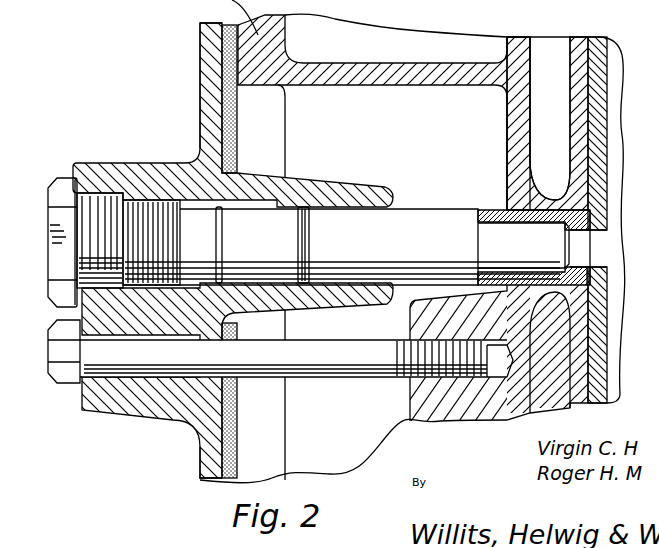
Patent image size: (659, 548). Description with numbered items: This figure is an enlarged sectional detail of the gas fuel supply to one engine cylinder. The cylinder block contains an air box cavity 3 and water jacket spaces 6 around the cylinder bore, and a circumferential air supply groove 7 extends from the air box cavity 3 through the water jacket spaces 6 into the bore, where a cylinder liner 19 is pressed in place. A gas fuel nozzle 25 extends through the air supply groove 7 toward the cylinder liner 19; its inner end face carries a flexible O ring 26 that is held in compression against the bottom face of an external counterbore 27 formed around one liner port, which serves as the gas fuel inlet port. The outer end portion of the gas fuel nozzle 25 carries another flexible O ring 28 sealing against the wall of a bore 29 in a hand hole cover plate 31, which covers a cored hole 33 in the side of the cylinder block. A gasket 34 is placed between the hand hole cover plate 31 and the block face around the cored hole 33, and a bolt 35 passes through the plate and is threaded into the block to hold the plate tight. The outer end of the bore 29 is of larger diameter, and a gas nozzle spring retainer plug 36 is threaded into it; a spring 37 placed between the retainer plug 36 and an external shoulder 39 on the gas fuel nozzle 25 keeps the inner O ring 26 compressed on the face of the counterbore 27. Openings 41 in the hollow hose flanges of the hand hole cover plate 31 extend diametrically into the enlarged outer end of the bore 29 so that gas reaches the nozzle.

The air box cavity 3 is at (342, 97).
The water jacket spaces 6 is at (563, 118).
The circumferential air supply groove 7 is at (507, 186).
The cylinder liner 19 is at (596, 142).
The gas fuel nozzle 25 is at (490, 209).
The flexible O ring 26 is at (590, 277).
The external counterbore 27 is at (597, 241).
The flexible O ring 28 is at (308, 207).
The bore 29 is at (394, 212).
The hand hole cover plate 31 is at (174, 165).
The cored hole 33 is at (225, 101).
The gasket 34 is at (233, 43).
The bolt 35 is at (350, 360).
The gas nozzle spring retainer plug 36 is at (57, 190).
The spring 37 is at (132, 200).
The external shoulder 39 is at (196, 224).
The hose flange openings 41 is at (157, 200).